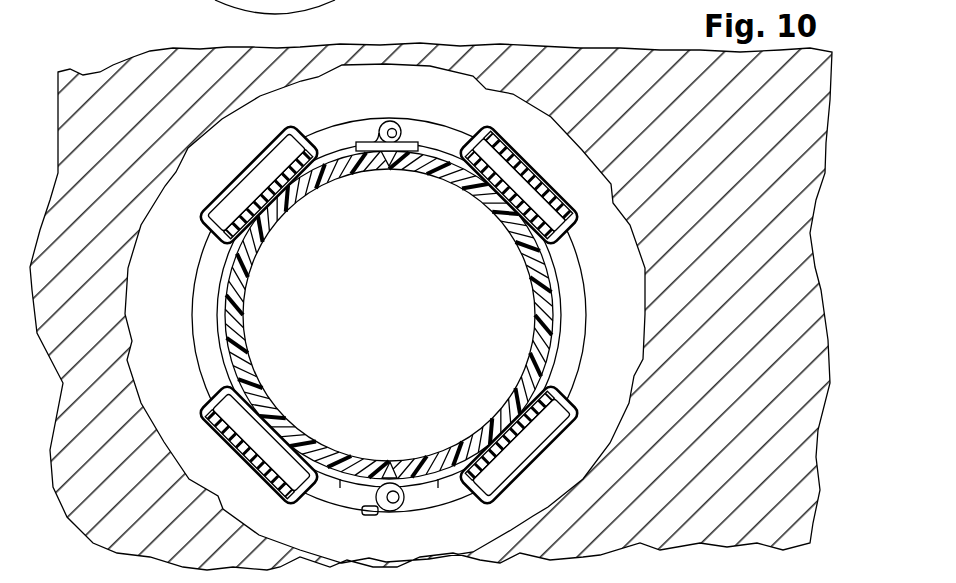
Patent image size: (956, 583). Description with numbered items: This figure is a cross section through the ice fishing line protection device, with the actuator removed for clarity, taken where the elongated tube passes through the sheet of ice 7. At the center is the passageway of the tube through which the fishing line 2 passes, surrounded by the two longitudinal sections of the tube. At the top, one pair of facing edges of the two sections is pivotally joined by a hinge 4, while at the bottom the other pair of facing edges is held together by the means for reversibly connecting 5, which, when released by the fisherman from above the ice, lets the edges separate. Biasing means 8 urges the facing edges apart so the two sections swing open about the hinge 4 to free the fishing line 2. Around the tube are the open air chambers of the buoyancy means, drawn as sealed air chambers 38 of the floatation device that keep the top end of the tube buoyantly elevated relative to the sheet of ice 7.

The fishing line 2 is at (386, 311).
The hinge 4 is at (399, 124).
The means for reversibly connecting 5 is at (397, 512).
The sheet of ice 7 is at (717, 166).
The biasing means 8 is at (380, 124).
The sealed air chamber 38 is at (298, 132).